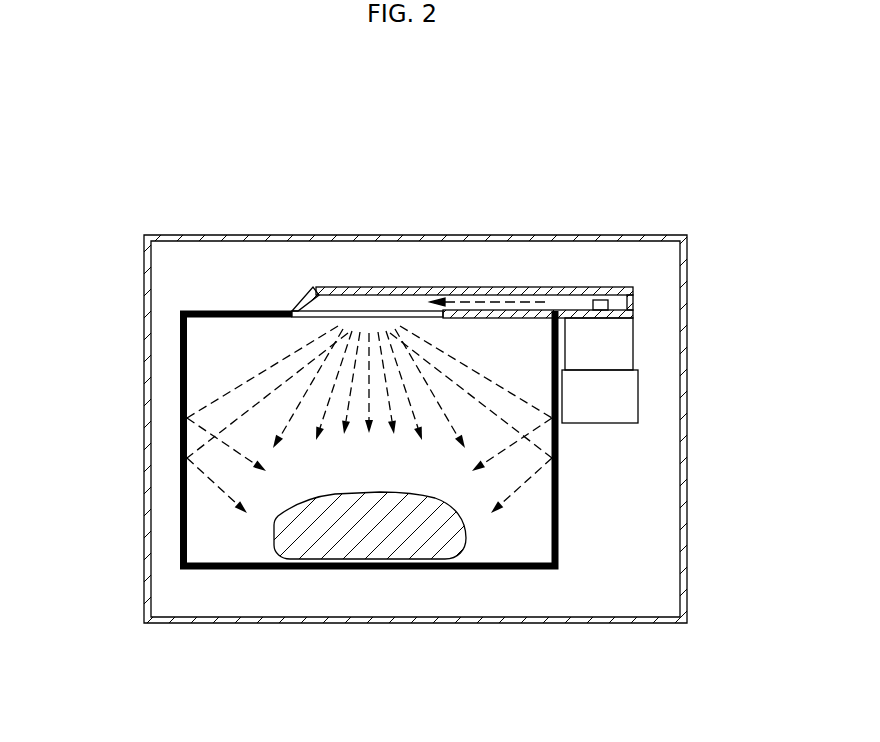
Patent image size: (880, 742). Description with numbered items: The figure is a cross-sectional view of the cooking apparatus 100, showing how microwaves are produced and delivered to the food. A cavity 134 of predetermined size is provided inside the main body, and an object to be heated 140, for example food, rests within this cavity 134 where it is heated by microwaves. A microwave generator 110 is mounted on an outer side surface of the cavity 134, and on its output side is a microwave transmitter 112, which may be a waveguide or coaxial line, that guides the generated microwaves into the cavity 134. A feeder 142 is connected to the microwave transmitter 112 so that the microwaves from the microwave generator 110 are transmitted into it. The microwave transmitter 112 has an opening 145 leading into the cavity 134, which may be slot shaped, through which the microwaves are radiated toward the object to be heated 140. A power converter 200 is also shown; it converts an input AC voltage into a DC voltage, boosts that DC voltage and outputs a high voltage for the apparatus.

The cooking appliance 100 is at (73, 152).
The microwave generator 110 is at (612, 345).
The microwave transmitter 112 is at (535, 287).
The cavity 134 is at (180, 393).
The object to be heated 140 is at (420, 525).
The feeder 142 is at (597, 293).
The opening 145 is at (370, 313).
The power converter 200 is at (603, 390).